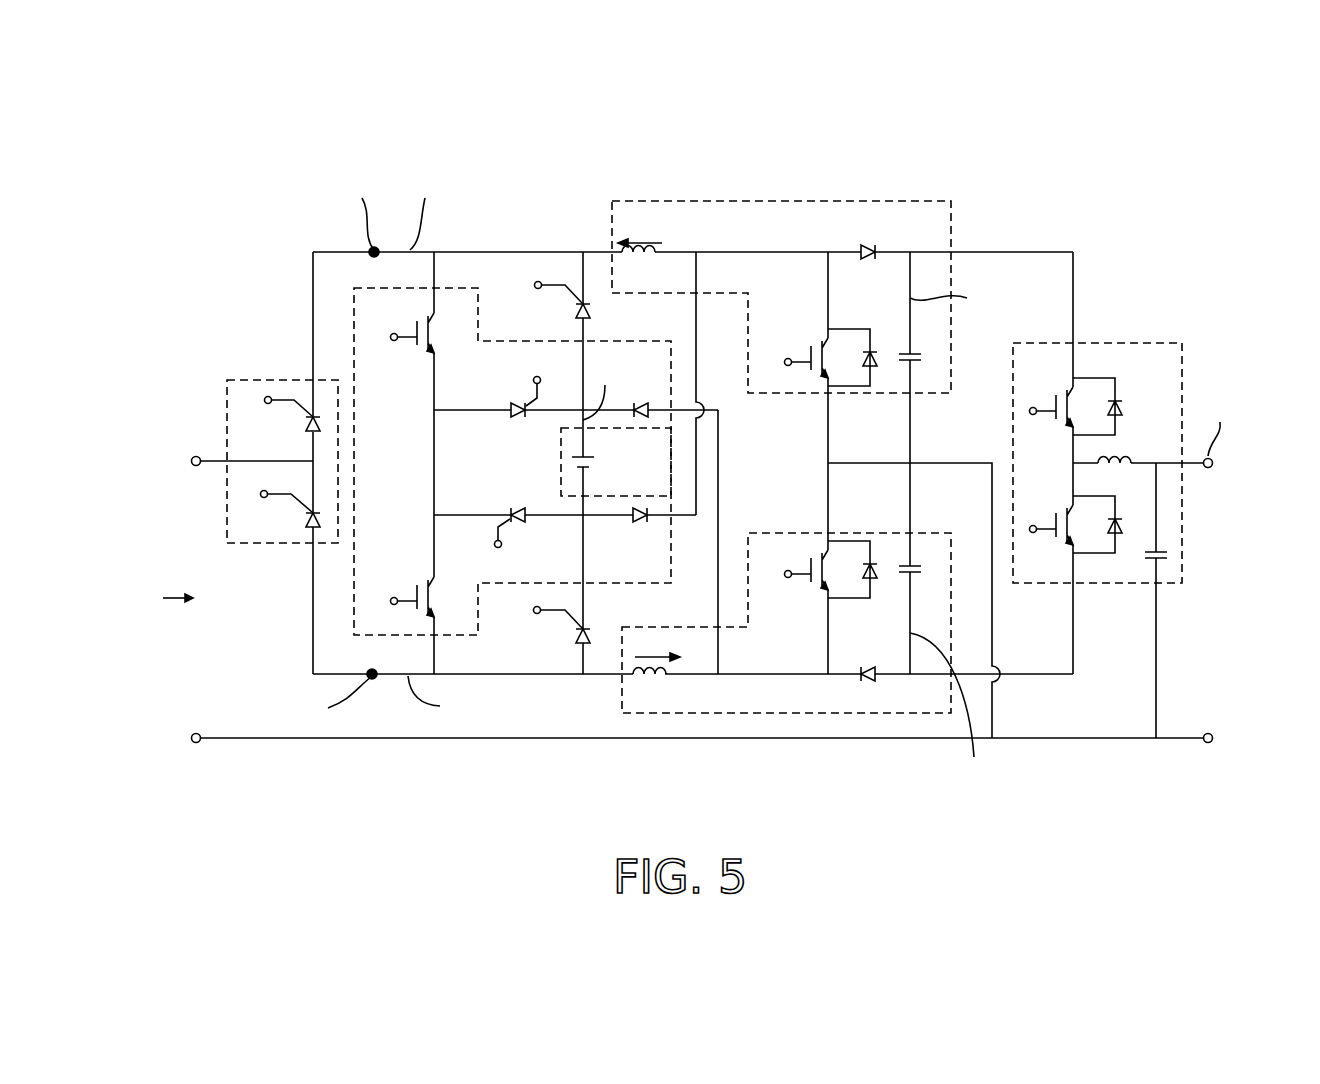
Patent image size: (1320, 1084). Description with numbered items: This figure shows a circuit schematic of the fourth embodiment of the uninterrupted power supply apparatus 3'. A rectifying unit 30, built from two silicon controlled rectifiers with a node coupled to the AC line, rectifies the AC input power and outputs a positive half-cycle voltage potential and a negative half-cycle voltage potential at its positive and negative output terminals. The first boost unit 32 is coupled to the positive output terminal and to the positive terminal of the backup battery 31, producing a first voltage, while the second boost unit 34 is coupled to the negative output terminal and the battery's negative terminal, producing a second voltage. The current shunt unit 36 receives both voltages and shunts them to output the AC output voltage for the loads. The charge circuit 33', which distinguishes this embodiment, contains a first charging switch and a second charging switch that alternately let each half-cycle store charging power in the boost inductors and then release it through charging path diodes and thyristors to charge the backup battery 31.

The uninterrupted power supply apparatus 3' is at (683, 458).
The rectifying unit 30 is at (270, 380).
The backup battery 31 is at (625, 466).
The first boost unit 32 is at (788, 201).
The charge circuit 33' is at (556, 441).
The second boost unit 34 is at (798, 713).
The current shunt unit 36 is at (1140, 343).